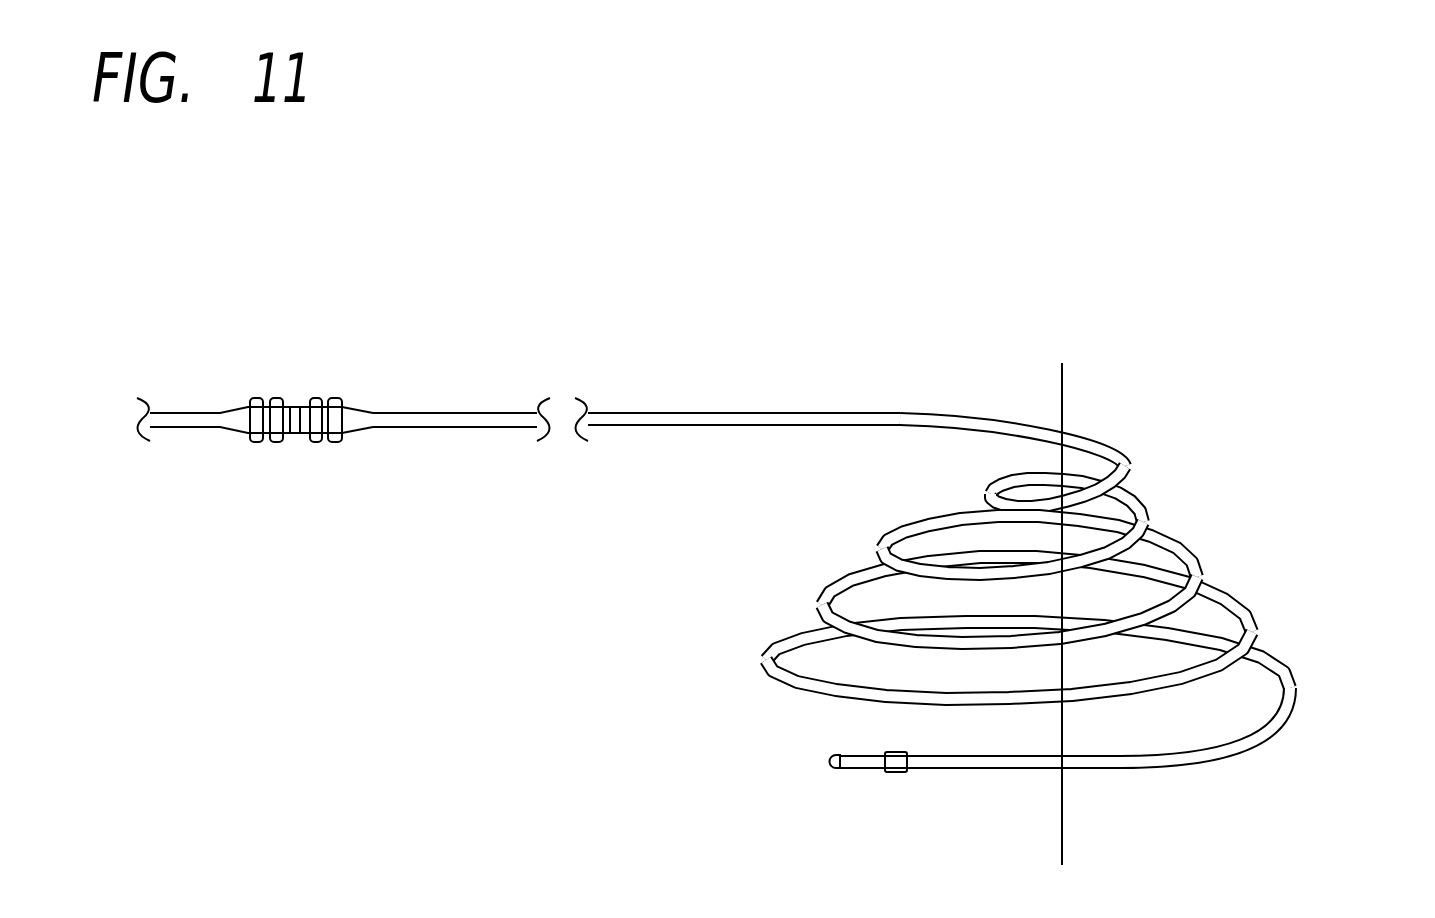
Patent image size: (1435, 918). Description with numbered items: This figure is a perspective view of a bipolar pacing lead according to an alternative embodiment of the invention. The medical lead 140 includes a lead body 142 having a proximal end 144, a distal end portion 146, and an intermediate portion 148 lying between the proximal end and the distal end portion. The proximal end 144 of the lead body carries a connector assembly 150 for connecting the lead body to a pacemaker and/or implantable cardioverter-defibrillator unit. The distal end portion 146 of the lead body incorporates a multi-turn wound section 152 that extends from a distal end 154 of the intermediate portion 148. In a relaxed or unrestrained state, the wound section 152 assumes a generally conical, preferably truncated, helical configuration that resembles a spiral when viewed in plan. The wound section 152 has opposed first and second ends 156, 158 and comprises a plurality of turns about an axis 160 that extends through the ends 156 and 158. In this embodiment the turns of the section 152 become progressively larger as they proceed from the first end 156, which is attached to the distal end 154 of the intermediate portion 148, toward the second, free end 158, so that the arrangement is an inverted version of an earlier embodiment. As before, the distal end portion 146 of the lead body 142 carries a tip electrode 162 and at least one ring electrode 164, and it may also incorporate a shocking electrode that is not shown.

The medical lead 140 is at (712, 352).
The lead body 142 is at (792, 383).
The proximal end 144 is at (385, 411).
The distal end portion 146 is at (1158, 437).
The intermediate portion 148 is at (882, 413).
The connector assembly 150 is at (286, 364).
The wound section 152 is at (1215, 533).
The distal end of the intermediate portion 154 is at (1010, 418).
The first end 156 is at (1088, 478).
The second end 158 is at (1293, 712).
The axis 160 is at (1063, 825).
The tip electrode 162 is at (829, 763).
The ring electrode 164 is at (895, 772).